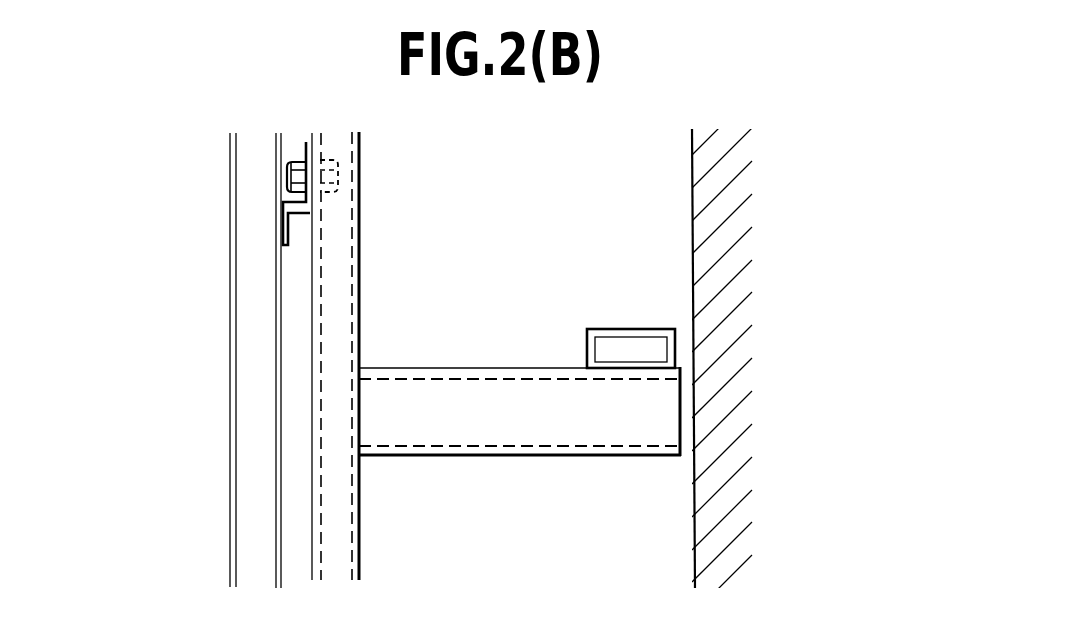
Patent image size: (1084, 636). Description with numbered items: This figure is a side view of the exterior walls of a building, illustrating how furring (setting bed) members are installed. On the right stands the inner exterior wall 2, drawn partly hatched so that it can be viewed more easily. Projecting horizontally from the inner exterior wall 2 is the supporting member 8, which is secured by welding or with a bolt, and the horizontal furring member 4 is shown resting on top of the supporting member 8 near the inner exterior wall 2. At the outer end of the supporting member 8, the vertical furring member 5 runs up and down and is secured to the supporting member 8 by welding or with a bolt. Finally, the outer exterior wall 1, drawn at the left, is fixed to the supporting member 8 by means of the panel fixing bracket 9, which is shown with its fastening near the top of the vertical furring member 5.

The outer exterior wall 1 is at (245, 497).
The inner exterior wall 2 is at (720, 505).
The horizontal furring member 4 is at (619, 329).
The vertical furring member 5 is at (360, 239).
The supporting member 8 is at (507, 457).
The bracket for securing a panel 9 is at (285, 213).